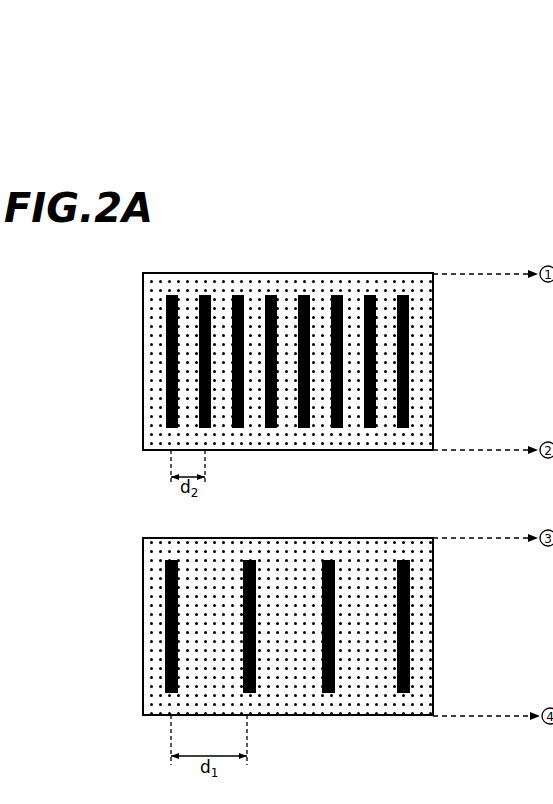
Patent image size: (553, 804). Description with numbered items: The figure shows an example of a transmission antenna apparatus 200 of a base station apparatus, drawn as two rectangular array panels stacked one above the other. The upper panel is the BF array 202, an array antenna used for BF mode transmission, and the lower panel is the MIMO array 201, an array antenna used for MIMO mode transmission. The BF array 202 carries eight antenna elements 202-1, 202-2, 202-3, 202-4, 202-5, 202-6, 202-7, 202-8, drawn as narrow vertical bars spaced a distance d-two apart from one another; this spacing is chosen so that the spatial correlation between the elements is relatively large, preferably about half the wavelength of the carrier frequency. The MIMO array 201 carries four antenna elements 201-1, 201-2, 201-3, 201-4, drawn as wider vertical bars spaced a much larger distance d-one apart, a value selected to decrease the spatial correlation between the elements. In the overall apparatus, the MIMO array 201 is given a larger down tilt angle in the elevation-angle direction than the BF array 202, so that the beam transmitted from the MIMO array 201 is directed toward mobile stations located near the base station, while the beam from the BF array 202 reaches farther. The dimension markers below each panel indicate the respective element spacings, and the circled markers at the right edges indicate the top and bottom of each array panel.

The transmission antenna apparatus 200 is at (281, 459).
The BF array 202 is at (281, 345).
The MIMO array 201 is at (315, 604).
The antenna element 202-1 is at (166, 338).
The antenna element 202-2 is at (204, 296).
The antenna element 202-3 is at (238, 296).
The antenna element 202-4 is at (272, 296).
The antenna element 202-5 is at (302, 296).
The antenna element 202-6 is at (338, 296).
The antenna element 202-7 is at (370, 296).
The antenna element 202-8 is at (410, 347).
The antenna element 201-1 is at (207, 595).
The antenna element 201-2 is at (283, 595).
The antenna element 201-3 is at (363, 595).
The antenna element 201-4 is at (410, 607).